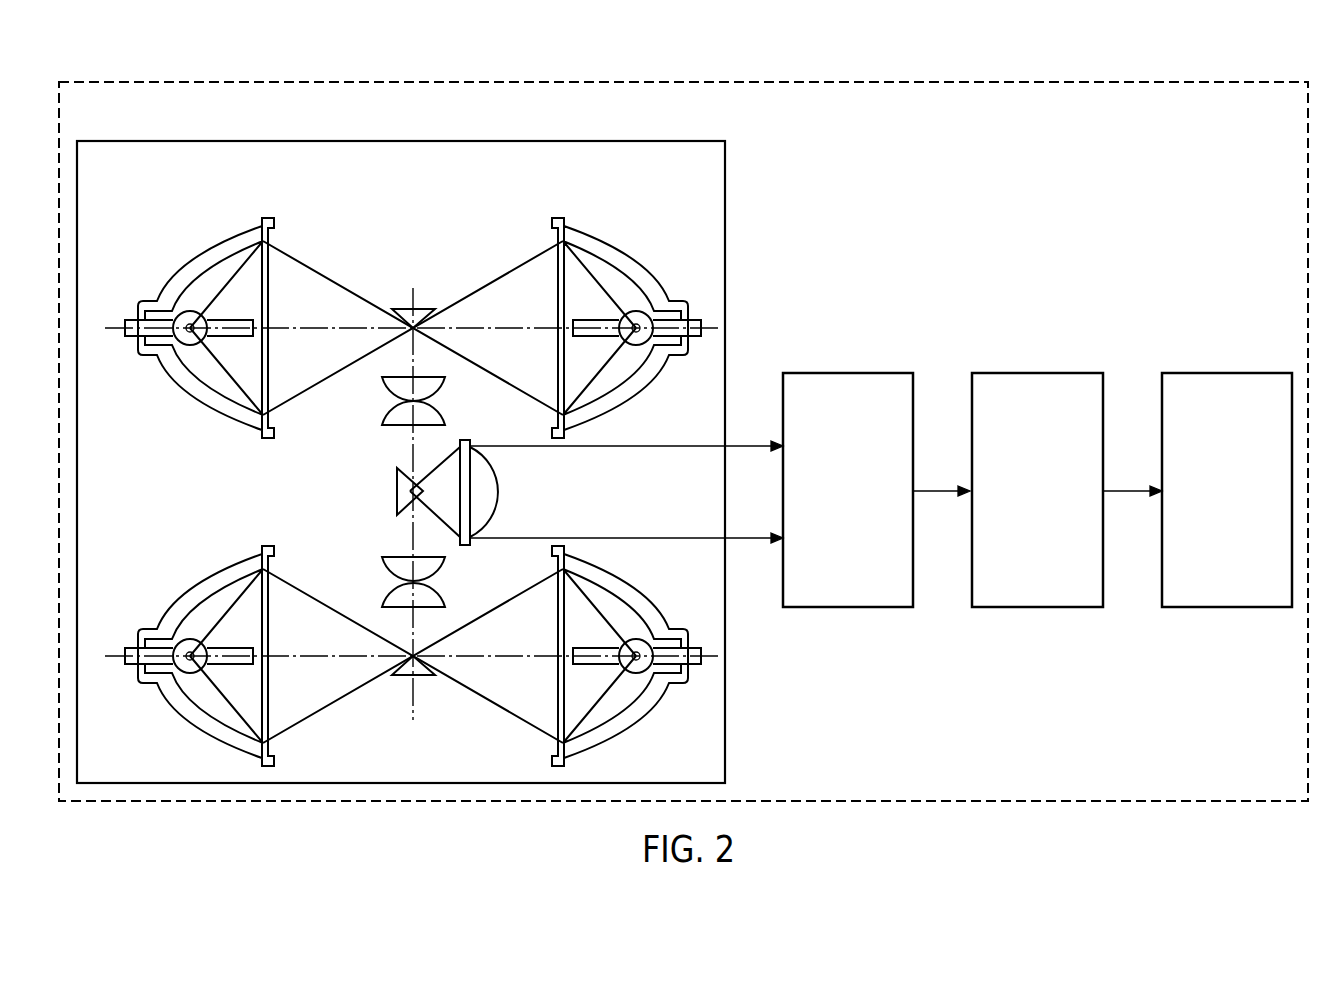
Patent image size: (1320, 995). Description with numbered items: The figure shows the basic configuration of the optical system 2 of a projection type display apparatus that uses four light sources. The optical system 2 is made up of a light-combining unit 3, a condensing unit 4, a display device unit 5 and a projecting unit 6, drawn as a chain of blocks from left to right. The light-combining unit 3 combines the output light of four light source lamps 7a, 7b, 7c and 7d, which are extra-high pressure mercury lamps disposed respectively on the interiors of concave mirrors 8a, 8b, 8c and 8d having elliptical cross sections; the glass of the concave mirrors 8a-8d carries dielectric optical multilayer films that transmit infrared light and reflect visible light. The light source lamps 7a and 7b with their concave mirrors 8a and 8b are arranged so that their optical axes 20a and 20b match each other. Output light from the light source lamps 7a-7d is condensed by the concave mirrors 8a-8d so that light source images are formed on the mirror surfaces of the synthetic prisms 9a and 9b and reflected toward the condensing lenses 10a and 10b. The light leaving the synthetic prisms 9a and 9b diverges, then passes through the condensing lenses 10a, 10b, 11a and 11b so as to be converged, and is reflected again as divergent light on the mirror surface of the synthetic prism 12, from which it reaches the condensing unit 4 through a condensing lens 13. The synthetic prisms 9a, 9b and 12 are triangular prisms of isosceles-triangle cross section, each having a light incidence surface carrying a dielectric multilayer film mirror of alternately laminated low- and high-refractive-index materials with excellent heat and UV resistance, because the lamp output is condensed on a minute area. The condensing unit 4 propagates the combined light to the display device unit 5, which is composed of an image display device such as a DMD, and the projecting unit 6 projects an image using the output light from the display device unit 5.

The optical system 2 is at (1115, 80).
The light-combining unit 3 is at (582, 118).
The condensing unit 4 is at (856, 373).
The display device unit 5 is at (1060, 372).
The projecting unit 6 is at (1238, 372).
The light source lamp 7a is at (190, 311).
The light source lamp 7b is at (636, 311).
The light source lamp 7c is at (190, 673).
The light source lamp 7d is at (636, 673).
The concave mirror 8a is at (188, 384).
The concave mirror 8b is at (638, 384).
The concave mirror 8c is at (188, 600).
The concave mirror 8d is at (638, 600).
The synthetic prism 9a is at (405, 308).
The synthetic prism 9b is at (421, 678).
The condensing lens 10a is at (440, 385).
The condensing lens 10b is at (440, 598).
The condensing lens 11a is at (385, 418).
The condensing lens 11b is at (385, 565).
The synthetic prism 12 is at (396, 491).
The condensing lens 13 is at (500, 491).
The optical axis 20a is at (178, 329).
The optical axis 20b is at (635, 328).